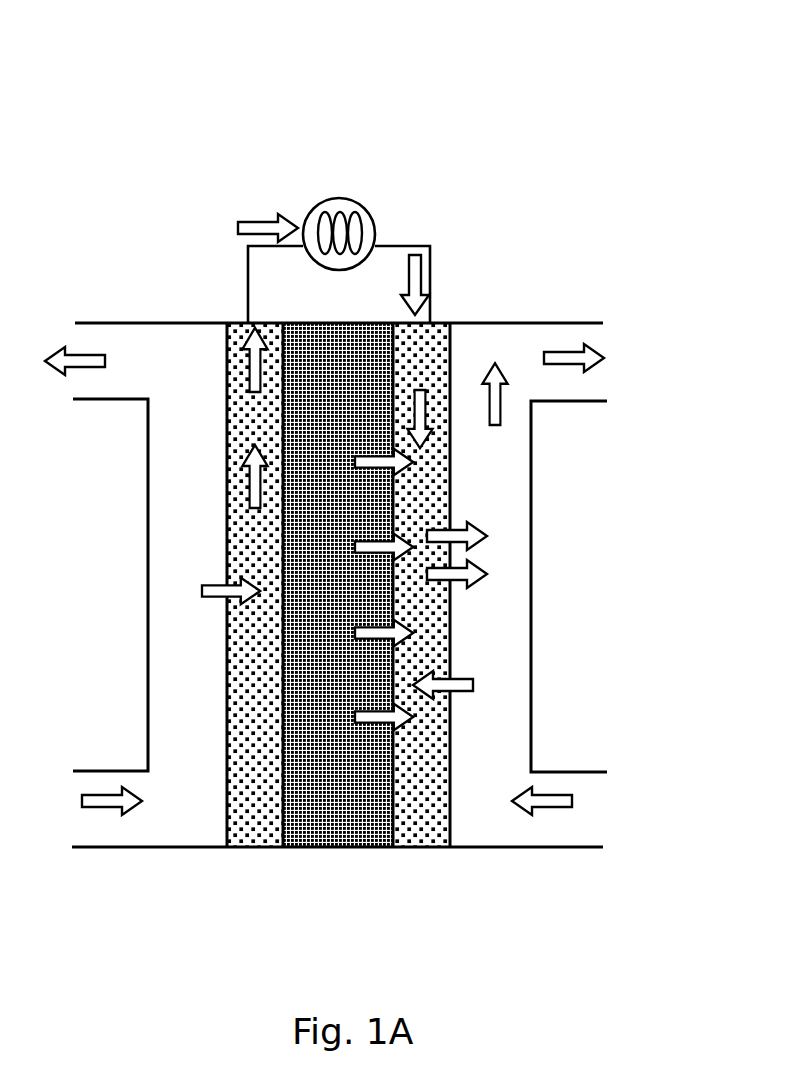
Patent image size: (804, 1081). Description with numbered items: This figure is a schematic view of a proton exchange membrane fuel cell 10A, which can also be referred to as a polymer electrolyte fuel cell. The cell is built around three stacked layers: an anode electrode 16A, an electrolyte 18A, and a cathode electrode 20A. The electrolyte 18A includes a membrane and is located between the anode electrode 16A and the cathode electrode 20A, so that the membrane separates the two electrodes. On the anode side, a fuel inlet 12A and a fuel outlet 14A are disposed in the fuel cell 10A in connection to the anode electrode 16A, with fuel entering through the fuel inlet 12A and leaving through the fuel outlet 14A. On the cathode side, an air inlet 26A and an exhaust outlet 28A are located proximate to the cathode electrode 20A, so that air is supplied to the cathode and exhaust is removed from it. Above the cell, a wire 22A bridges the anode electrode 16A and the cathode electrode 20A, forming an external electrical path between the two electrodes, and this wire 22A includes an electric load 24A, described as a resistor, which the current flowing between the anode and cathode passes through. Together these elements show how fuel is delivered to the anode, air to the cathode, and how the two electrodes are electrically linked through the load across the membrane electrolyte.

The proton exchange membrane fuel cell 10A is at (627, 118).
The fuel inlet 12A is at (111, 813).
The fuel outlet 14A is at (103, 355).
The anode electrode 16A is at (265, 813).
The electrolyte 18A is at (343, 807).
The cathode electrode 20A is at (427, 827).
The wire 22A is at (410, 246).
The electric load 24A is at (338, 199).
The air inlet 26A is at (549, 813).
The exhaust outlet 28A is at (569, 368).